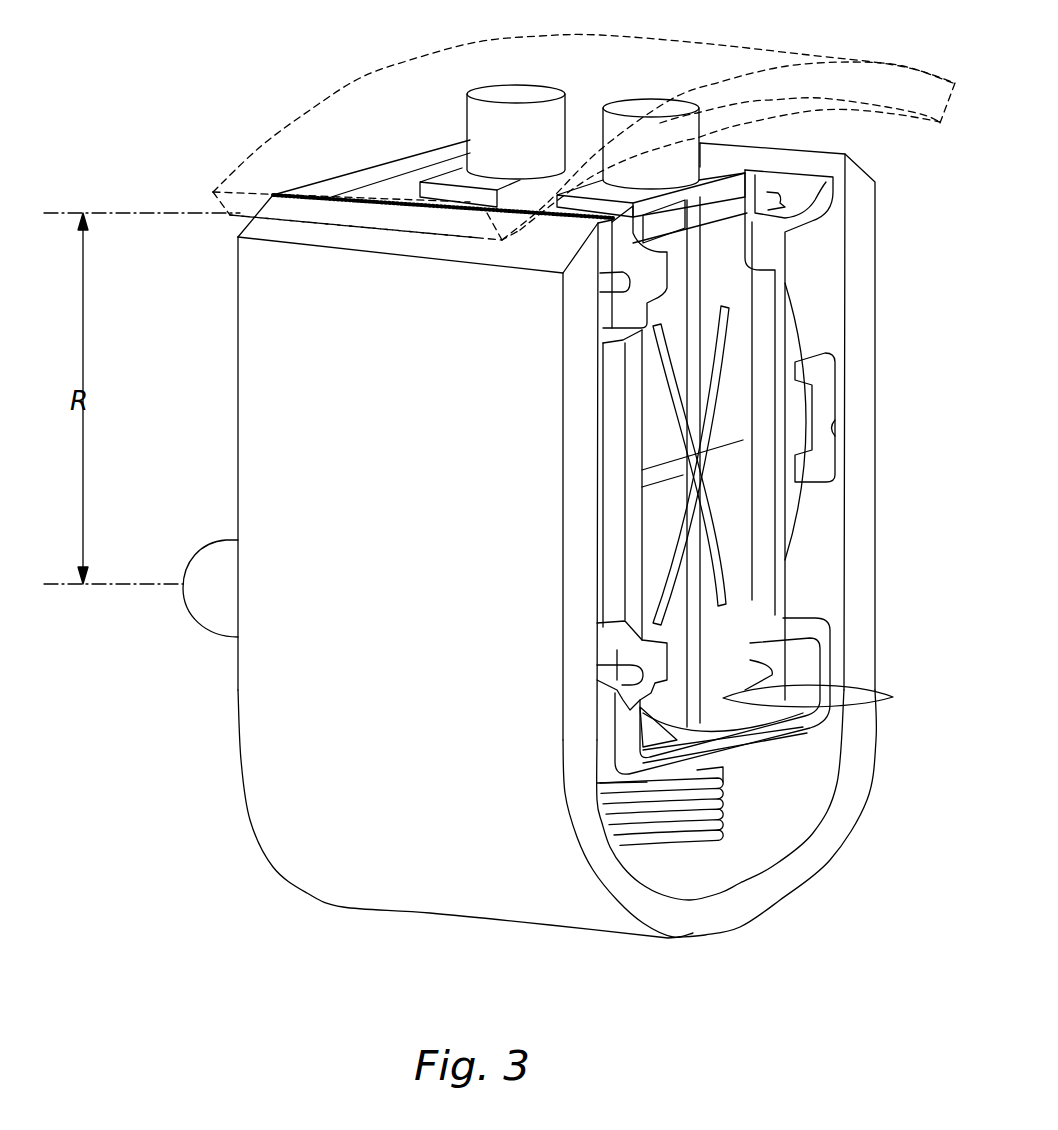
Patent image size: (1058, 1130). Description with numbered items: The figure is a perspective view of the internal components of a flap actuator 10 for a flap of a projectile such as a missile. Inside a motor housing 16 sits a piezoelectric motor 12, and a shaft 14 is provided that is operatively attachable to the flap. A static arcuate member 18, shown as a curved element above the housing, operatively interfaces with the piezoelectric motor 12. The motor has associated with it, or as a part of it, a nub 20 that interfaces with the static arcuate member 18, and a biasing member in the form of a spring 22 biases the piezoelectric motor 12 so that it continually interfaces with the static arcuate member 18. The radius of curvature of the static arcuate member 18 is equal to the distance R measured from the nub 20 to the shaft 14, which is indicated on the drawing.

The flap actuator 10 is at (225, 889).
The piezoelectric motor 12 is at (737, 451).
The shaft 14 is at (204, 618).
The motor housing 16 is at (857, 765).
The static arcuate member 18 is at (320, 128).
The nub 20 is at (687, 138).
The spring 22 is at (670, 822).